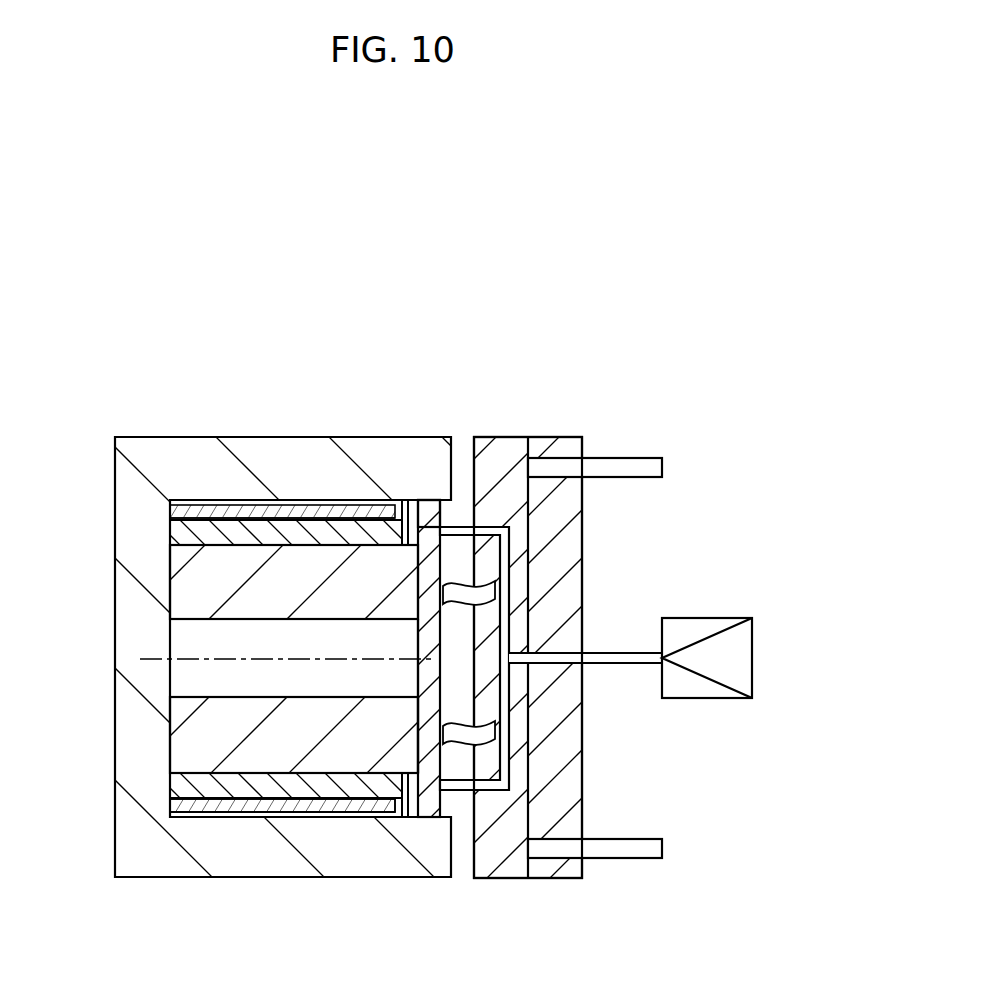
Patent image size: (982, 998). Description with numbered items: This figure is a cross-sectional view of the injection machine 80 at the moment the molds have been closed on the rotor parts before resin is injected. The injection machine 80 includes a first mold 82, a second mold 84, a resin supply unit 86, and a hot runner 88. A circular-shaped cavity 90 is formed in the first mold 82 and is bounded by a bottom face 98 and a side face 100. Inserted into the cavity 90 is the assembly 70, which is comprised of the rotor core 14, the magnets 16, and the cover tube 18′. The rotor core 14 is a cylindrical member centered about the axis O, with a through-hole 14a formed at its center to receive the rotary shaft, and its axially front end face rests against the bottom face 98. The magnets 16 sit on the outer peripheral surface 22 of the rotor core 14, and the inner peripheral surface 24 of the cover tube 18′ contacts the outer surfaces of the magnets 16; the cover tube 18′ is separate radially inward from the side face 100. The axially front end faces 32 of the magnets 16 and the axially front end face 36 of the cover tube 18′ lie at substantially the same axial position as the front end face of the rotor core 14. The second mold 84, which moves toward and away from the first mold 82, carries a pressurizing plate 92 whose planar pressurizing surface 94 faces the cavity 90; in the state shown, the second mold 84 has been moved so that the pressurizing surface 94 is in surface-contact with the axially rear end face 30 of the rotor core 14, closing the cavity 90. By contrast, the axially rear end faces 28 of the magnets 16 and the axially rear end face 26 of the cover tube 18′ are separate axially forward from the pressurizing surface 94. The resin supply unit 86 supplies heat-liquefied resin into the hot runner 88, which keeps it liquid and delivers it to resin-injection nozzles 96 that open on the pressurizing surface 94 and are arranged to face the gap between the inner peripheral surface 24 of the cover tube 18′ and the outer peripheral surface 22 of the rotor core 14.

The first mold 82 is at (145, 408).
The assembly 70 is at (340, 470).
The rotor core 14 is at (185, 595).
The through-hole 14a is at (278, 624).
The bottom face 98 is at (172, 652).
The axis O is at (140, 660).
The magnets 16 is at (253, 535).
The axially front end faces of the magnets 32 is at (173, 514).
The axially front end face of the cover tube 36 is at (172, 503).
The outer peripheral surface of the rotor core 22 is at (208, 520).
The cover tube 18′ is at (295, 510).
The axially rear end faces of the magnets 28 is at (402, 515).
The resin-injection nozzles 96 is at (410, 538).
The pressurizing plate 92 is at (432, 690).
The axially rear end face of the cover tube 26 is at (414, 500).
The pressurizing surface 94 is at (418, 634).
The axially rear end face of the rotor core 30 is at (418, 720).
The second mold 84 is at (553, 394).
The hot runner 88 is at (510, 583).
The resin supply unit 86 is at (752, 658).
The injection machine 80 is at (485, 260).
The inner peripheral surface of the cover tube 24 is at (175, 820).
The cavity 90 is at (268, 814).
The side face 100 is at (330, 806).